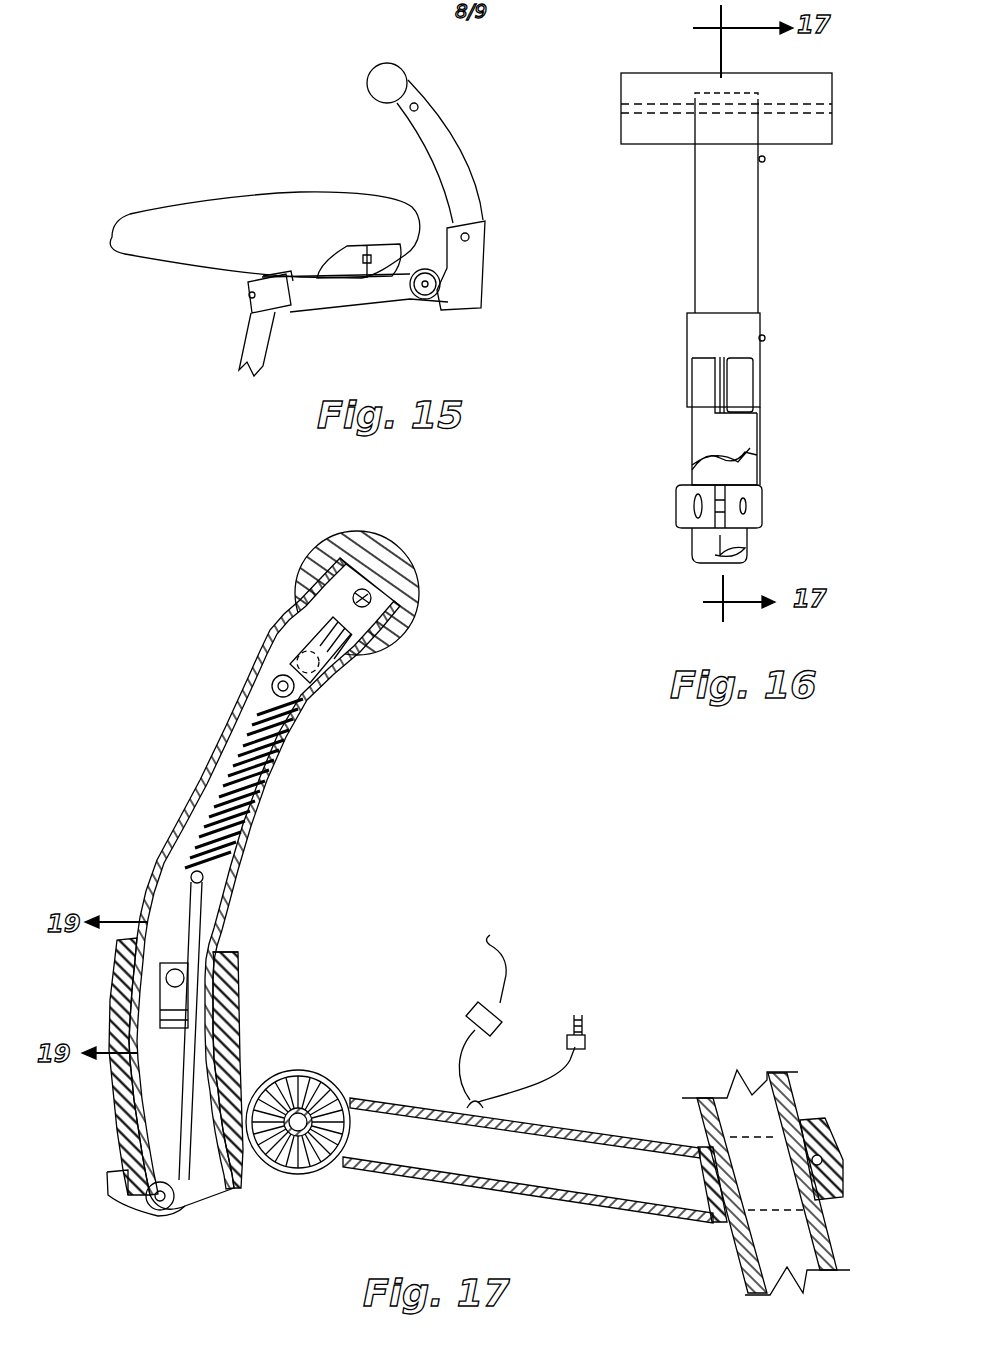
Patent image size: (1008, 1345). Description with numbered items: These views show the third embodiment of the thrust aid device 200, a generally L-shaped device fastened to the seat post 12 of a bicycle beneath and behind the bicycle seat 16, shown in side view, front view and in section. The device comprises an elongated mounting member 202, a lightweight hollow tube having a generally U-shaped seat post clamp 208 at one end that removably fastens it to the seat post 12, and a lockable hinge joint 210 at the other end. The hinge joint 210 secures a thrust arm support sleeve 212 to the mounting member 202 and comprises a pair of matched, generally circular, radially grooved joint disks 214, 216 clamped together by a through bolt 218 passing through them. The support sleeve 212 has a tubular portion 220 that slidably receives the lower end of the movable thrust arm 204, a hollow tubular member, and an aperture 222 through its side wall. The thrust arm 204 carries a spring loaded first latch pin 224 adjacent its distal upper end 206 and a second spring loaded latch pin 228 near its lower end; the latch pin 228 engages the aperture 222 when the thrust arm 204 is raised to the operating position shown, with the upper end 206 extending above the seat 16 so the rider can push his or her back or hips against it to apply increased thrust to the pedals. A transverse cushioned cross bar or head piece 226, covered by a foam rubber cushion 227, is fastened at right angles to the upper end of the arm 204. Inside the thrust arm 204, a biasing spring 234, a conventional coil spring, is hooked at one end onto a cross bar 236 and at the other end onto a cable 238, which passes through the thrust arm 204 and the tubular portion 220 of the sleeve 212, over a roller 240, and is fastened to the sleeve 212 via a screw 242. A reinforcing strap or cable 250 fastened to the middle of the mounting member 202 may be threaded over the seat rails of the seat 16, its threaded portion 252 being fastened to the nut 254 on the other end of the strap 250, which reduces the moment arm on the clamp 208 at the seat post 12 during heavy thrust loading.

In FIG. 15, the seat post 12 is at (262, 372).
In FIG. 17, the seat post 12 is at (766, 1182).
In FIG. 15, the bicycle seat 16 is at (278, 212).
In FIG. 15, the thrust aid device 200 is at (520, 216).
In FIG. 15, the mounting member 202 is at (345, 300).
In FIG. 16, the mounting member 202 is at (757, 447).
In FIG. 17, the mounting member 202 is at (653, 1133).
In FIG. 16, the thrust arm 204 is at (762, 253).
In FIG. 17, the thrust arm 204 is at (280, 780).
In FIG. 17, the upper end 206 is at (353, 668).
In FIG. 15, the seat post clamp 208 is at (250, 295).
In FIG. 16, the hinge joint 210 is at (772, 420).
In FIG. 17, the hinge joint 210 is at (343, 1090).
In FIG. 15, the thrust arm support sleeve 212 is at (477, 297).
In FIG. 16, the thrust arm support sleeve 212 is at (700, 340).
In FIG. 17, the thrust arm support sleeve 212 is at (230, 1017).
In FIG. 16, the joint disk 214 is at (703, 382).
In FIG. 16, the joint disk 216 is at (745, 373).
In FIG. 17, the joint disk 216 is at (330, 1077).
In FIG. 17, the through bolt 218 is at (320, 1177).
In FIG. 17, the tubular portion 220 is at (233, 952).
In FIG. 15, the aperture 222 is at (470, 238).
In FIG. 15, the latch pin 224 is at (430, 115).
In FIG. 16, the latch pin 224 is at (763, 163).
In FIG. 17, the latch pin 224 is at (300, 653).
In FIG. 15, the head piece 226 is at (367, 94).
In FIG. 16, the head piece 226 is at (808, 75).
In FIG. 17, the head piece 226 is at (358, 588).
In FIG. 17, the foam rubber cushion 227 is at (412, 573).
In FIG. 17, the second latch pin 228 is at (167, 983).
In FIG. 17, the biasing spring 234 is at (243, 732).
In FIG. 17, the cross bar 236 is at (310, 720).
In FIG. 17, the cable 238 is at (187, 1097).
In FIG. 17, the roller 240 is at (163, 1215).
In FIG. 17, the screw 242 is at (117, 1172).
In FIG. 17, the reinforcing strap 250 is at (540, 1093).
In FIG. 17, the threaded portion 252 is at (582, 1030).
In FIG. 17, the nut 254 is at (488, 950).